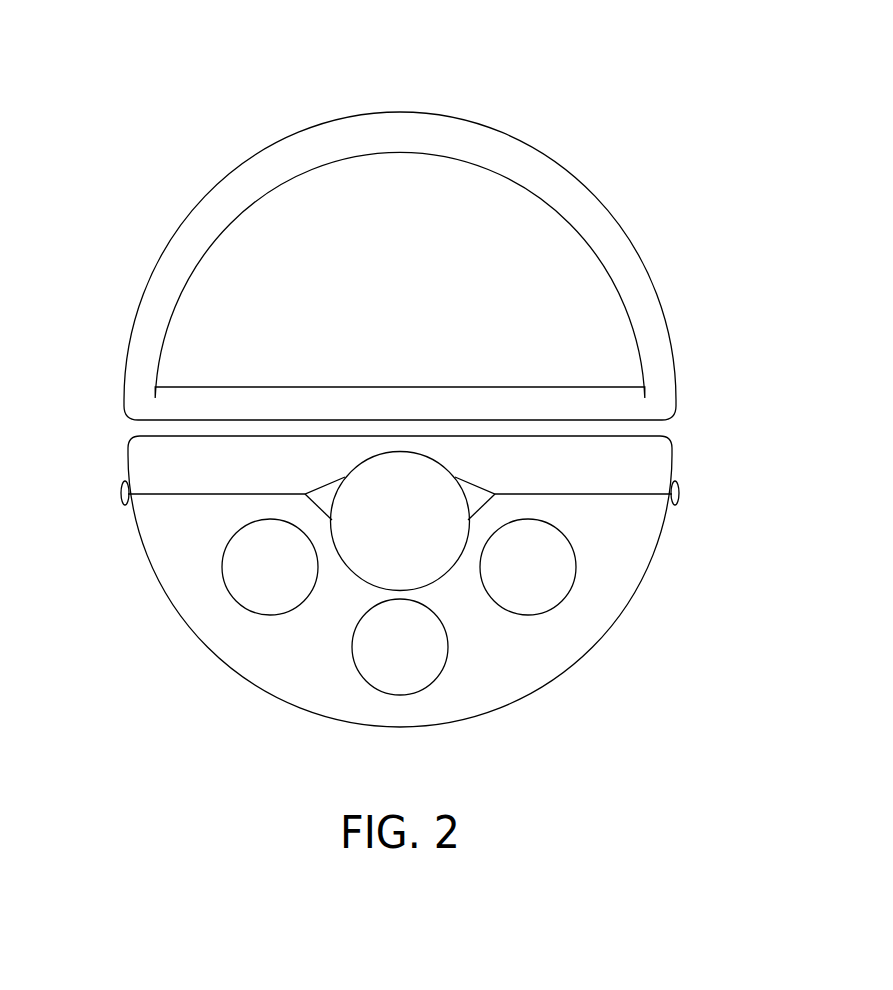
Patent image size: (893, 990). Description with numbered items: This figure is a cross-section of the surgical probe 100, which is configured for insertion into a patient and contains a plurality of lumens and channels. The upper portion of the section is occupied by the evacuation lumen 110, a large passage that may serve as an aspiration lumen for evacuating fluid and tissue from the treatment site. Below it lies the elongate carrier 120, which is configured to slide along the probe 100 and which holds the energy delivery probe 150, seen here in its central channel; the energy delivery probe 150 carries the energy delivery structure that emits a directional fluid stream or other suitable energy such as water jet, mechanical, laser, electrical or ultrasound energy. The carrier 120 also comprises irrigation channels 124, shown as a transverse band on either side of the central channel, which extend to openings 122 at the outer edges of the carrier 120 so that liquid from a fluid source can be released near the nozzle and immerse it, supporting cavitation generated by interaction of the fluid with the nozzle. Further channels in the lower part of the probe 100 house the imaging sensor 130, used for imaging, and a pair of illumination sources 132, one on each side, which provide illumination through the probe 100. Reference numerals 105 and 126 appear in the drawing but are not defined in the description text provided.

The surgical probe 100 is at (168, 70).
The upper housing 105 is at (403, 120).
The evacuation lumen 110 is at (497, 243).
The carrier 120 is at (247, 685).
The openings 122 is at (118, 493).
The irrigation channels 124 is at (327, 488).
The central cylinder 126 is at (405, 480).
The imaging sensor 130 is at (418, 664).
The illumination sources 132 is at (240, 563).
The energy delivery probe 150 is at (366, 545).